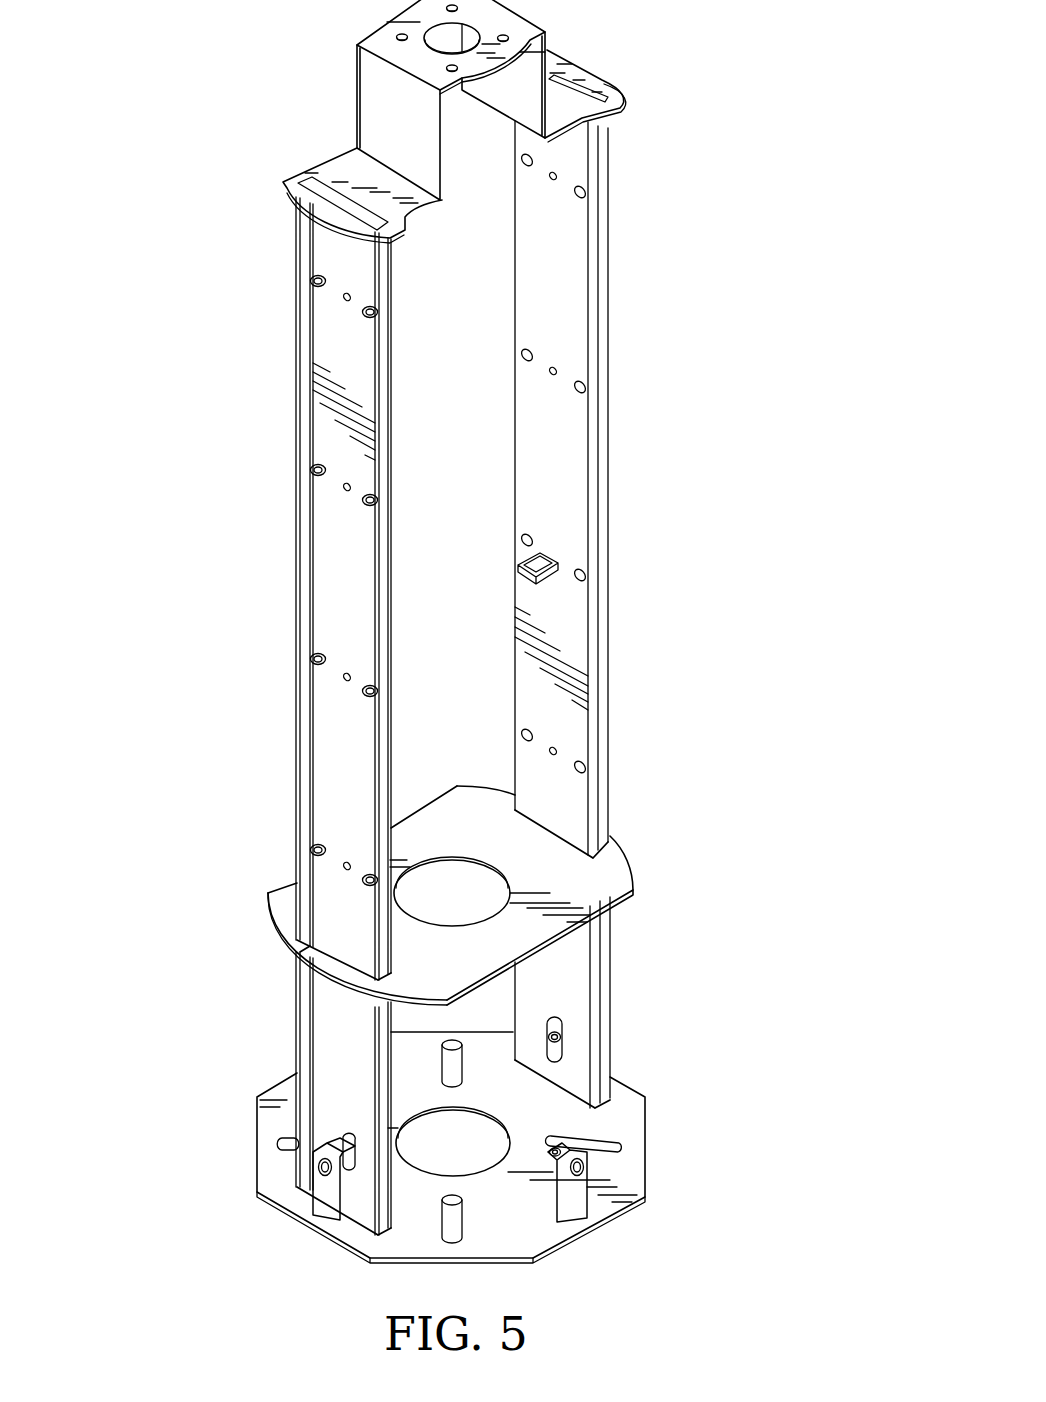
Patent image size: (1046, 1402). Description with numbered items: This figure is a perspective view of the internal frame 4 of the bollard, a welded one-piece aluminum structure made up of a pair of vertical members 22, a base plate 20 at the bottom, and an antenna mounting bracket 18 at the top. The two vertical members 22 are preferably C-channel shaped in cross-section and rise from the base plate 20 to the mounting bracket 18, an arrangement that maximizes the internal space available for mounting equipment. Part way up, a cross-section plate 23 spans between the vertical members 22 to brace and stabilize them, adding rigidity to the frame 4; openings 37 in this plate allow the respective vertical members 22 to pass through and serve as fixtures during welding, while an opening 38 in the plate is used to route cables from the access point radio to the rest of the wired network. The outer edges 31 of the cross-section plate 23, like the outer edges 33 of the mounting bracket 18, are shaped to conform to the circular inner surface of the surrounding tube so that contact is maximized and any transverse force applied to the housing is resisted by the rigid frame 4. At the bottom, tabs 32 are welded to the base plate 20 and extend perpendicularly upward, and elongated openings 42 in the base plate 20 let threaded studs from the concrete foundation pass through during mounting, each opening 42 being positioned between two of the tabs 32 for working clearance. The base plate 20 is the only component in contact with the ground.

The frame 4 is at (630, 475).
The antenna mounting bracket 18 is at (330, 203).
The base plate 20 is at (648, 1137).
The vertical members 22 is at (580, 978).
The cross-section plate 23 is at (550, 892).
The outer edges 31 is at (620, 858).
The tabs 32 is at (330, 1207).
The outer edges 33 is at (595, 78).
The openings 37 is at (538, 827).
The opening 38 is at (447, 858).
The elongated openings 42 is at (457, 1070).